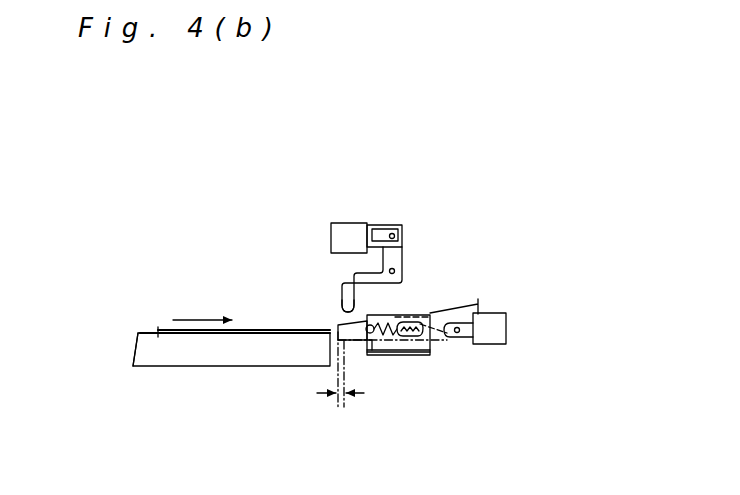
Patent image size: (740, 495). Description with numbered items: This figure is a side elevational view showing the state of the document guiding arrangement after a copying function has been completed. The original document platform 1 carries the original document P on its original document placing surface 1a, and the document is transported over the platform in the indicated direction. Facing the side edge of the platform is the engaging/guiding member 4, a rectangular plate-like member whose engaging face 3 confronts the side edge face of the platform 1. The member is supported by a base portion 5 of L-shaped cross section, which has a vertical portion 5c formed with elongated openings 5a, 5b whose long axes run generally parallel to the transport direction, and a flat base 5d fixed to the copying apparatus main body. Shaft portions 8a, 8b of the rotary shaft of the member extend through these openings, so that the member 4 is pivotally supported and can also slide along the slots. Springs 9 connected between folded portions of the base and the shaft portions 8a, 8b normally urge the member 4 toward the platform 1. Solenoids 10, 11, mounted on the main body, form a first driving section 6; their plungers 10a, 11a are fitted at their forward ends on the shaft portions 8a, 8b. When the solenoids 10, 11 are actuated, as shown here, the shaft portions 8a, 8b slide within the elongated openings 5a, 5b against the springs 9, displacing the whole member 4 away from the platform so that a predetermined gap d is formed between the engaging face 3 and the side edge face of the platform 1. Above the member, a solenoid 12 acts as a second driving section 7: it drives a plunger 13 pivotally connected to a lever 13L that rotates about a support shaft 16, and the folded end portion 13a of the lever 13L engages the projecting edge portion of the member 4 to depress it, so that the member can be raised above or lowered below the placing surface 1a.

The original document platform 1 is at (205, 355).
The original document placing surface 1a is at (147, 333).
The original document P is at (246, 333).
The engaging face 3 is at (337, 327).
The engaging/guiding member 4 is at (488, 296).
The base portion 5 is at (454, 343).
The elongated opening 5a is at (397, 325).
The elongated opening 5b is at (484, 282).
The vertical portion 5c is at (364, 354).
The flat base 5d is at (392, 354).
The first driving section 6 is at (509, 337).
The second driving section 7 is at (352, 221).
The shaft portion 8a is at (410, 330).
The shaft portion 8b is at (465, 392).
The spring 9 is at (378, 324).
The solenoid 10 is at (495, 327).
The plunger 10a is at (446, 337).
The solenoid 11 is at (566, 316).
The plunger 11a is at (565, 357).
The solenoid 12 is at (345, 238).
The plunger 13 is at (373, 237).
The lever 13L is at (417, 219).
The folded end portion 13a is at (341, 299).
The support shaft 16 is at (394, 268).
The predetermined gap d is at (340, 380).